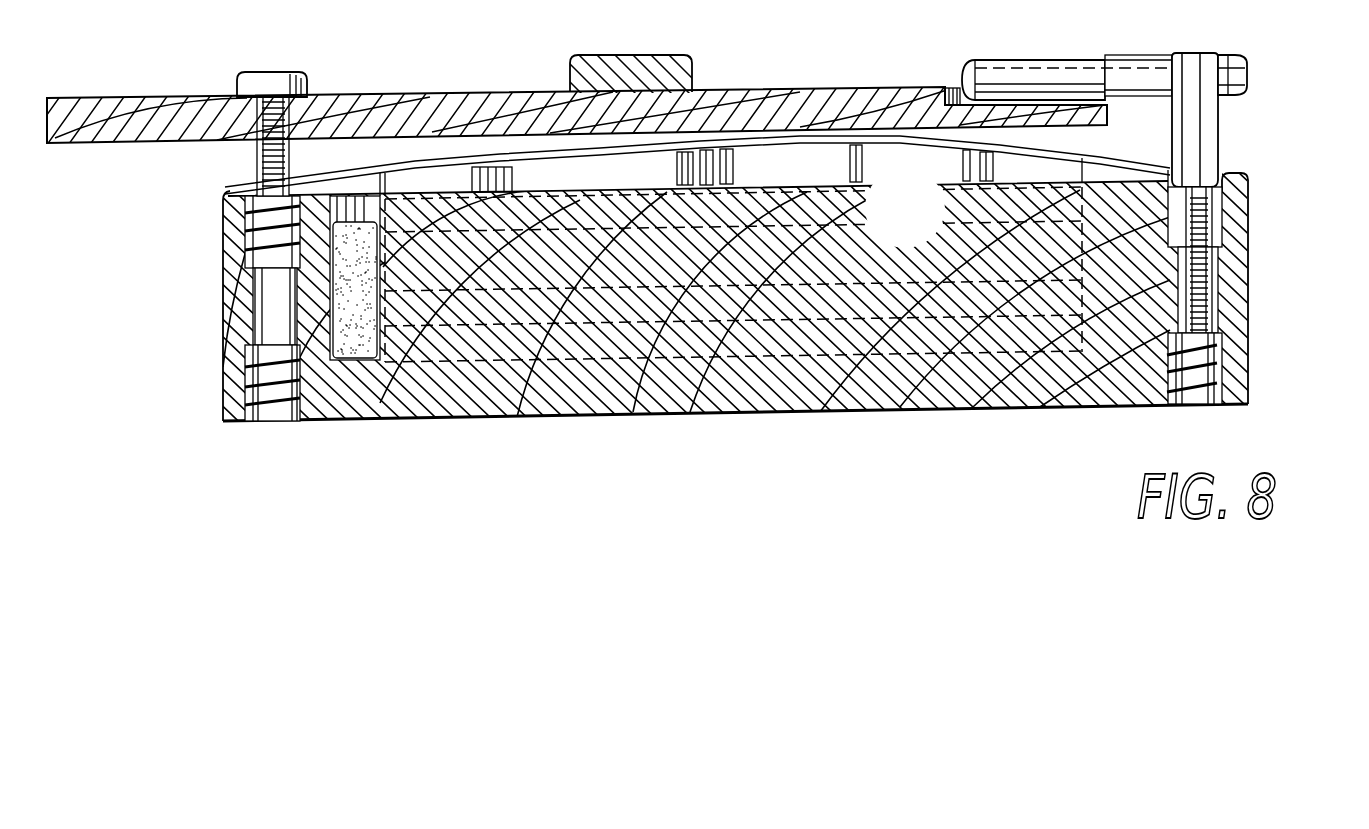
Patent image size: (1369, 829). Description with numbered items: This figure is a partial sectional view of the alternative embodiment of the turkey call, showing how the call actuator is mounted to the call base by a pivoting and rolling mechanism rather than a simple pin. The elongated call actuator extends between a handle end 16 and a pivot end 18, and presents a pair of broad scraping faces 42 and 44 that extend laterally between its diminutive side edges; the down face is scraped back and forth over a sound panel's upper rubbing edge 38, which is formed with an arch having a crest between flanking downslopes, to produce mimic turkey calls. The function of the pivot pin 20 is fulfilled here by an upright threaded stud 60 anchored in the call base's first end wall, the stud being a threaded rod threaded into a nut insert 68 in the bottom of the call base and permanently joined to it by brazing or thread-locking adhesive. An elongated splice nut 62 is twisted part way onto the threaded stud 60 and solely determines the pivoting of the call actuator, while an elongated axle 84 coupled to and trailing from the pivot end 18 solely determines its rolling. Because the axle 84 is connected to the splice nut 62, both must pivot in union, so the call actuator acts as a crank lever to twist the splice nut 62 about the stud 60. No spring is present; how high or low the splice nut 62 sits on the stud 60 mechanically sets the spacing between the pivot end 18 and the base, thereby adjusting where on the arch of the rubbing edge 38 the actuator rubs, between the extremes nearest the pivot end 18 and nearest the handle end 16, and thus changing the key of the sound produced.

The handle end 16 is at (127, 97).
The pivot end 18 is at (895, 88).
The broad scraping face 42 is at (497, 140).
The broad scraping face 44 is at (635, 56).
The elongated axle 84 is at (1028, 73).
The splice nut 62 is at (1218, 124).
The upper rubbing edge 38 is at (958, 150).
The threaded stud 60 is at (1210, 303).
The pivot pin 20 is at (1210, 303).
The nut insert 68 is at (1222, 373).